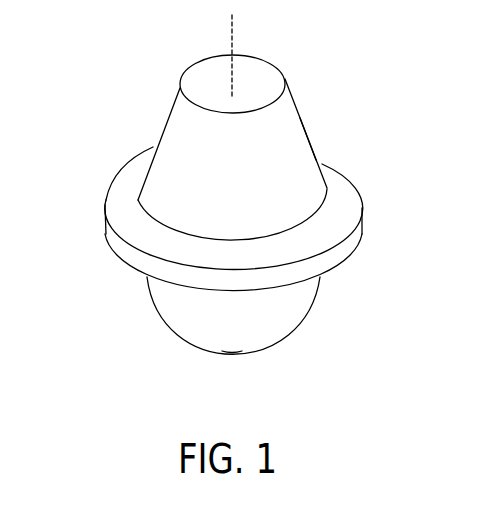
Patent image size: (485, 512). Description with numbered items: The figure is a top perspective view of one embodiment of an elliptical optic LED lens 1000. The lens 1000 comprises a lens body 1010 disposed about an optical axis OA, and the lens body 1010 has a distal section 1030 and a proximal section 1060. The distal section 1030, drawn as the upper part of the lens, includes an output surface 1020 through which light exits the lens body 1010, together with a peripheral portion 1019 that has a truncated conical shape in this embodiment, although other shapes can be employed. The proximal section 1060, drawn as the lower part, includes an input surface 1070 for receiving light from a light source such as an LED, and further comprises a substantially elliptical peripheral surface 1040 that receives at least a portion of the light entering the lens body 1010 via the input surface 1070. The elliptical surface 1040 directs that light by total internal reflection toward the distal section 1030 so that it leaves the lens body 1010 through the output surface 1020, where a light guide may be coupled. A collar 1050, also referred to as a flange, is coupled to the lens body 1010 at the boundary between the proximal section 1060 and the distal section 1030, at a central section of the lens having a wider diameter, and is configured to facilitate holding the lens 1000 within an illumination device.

The lens 1000 is at (244, 212).
The lens body 1010 is at (225, 132).
The peripheral portion 1019 is at (297, 93).
The output surface 1020 is at (264, 80).
The distal section 1030 is at (318, 143).
The elliptical peripheral surface 1040 is at (157, 213).
The collar 1050 is at (363, 226).
The proximal section 1060 is at (285, 305).
The input surface 1070 is at (230, 347).
The optical axis OA is at (251, 52).